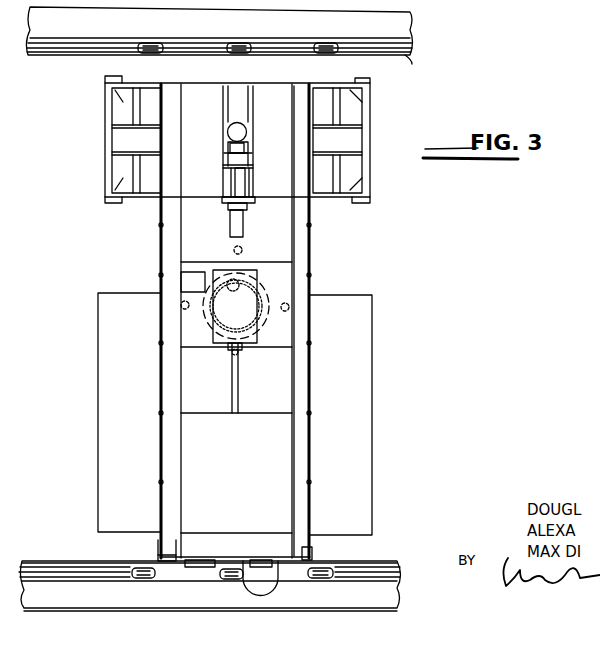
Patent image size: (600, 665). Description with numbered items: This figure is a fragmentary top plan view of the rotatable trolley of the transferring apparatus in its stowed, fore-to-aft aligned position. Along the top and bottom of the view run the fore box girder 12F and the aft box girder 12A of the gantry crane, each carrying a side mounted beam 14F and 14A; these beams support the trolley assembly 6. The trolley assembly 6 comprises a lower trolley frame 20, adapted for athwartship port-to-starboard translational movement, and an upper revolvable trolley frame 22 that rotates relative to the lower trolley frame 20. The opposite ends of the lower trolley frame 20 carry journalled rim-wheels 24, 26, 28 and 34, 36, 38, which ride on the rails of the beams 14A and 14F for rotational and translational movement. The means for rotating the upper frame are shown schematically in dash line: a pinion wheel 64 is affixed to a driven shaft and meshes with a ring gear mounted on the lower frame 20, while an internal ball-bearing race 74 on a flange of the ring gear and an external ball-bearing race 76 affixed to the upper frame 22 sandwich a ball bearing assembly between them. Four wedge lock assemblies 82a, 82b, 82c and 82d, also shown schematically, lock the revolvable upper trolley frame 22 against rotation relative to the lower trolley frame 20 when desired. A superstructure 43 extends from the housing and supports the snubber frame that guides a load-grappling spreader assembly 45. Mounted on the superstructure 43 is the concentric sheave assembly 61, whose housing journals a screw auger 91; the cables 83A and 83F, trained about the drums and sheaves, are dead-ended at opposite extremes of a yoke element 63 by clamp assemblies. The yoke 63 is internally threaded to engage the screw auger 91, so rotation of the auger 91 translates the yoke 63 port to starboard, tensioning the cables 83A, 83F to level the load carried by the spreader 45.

The trolley assembly 6 is at (124, 238).
The fore box girder 12F is at (408, 34).
The side mounted beam 14F is at (408, 56).
The aft box girder 12A is at (393, 597).
The side mounted beam 14A is at (380, 570).
The lower trolley frame 20 is at (300, 81).
The upper revolvable trolley frame 22 is at (160, 540).
The rim-wheel 24 is at (140, 578).
The rim-wheel 26 is at (230, 579).
The rim-wheel 28 is at (319, 578).
The rim-wheel 34 is at (150, 43).
The rim-wheel 36 is at (239, 43).
The rim-wheel 38 is at (331, 43).
The superstructure 43 is at (294, 223).
The load-grappling spreader assembly 45 is at (116, 142).
The concentric sheave assembly 61 is at (247, 128).
The yoke element 63 is at (249, 159).
The pinion wheel 64 is at (236, 306).
The internal ball-bearing race 74 is at (241, 349).
The external ball-bearing race 76 is at (249, 304).
The wedge lock assembly 82a is at (219, 247).
The wedge lock assembly 82b is at (178, 298).
The wedge lock assembly 82c is at (232, 353).
The wedge lock assembly 82d is at (290, 306).
The cable 83A is at (246, 142).
The cable 83F is at (224, 152).
The screw auger 91 is at (241, 177).